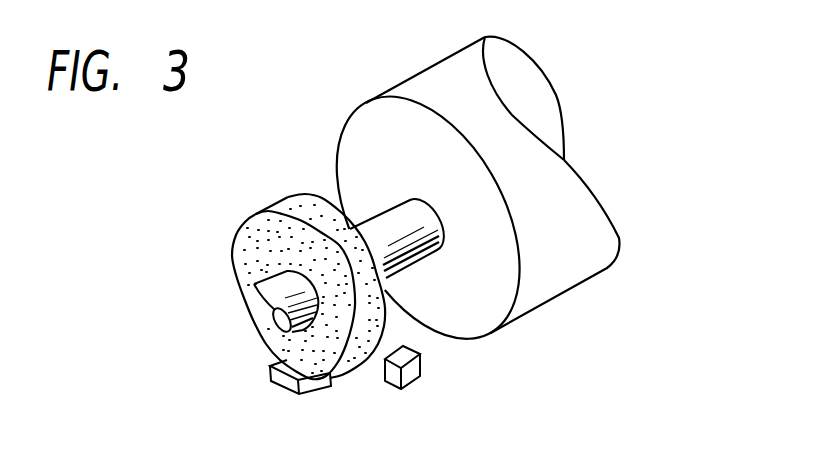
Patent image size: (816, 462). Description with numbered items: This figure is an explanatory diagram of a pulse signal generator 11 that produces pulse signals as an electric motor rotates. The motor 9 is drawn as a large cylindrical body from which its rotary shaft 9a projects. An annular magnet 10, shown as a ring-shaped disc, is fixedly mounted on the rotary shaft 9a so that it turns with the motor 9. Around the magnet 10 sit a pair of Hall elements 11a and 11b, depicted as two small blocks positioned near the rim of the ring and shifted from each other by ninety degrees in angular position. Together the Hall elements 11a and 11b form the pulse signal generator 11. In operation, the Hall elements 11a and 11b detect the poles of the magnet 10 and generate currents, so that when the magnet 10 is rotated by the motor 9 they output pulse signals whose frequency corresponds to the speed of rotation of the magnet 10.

The motor 9 is at (537, 58).
The rotary shaft 9a is at (397, 223).
The annular magnet 10 is at (286, 201).
The pulse signal generator 11 is at (347, 403).
The Hall element 11a is at (410, 378).
The Hall element 11b is at (298, 384).